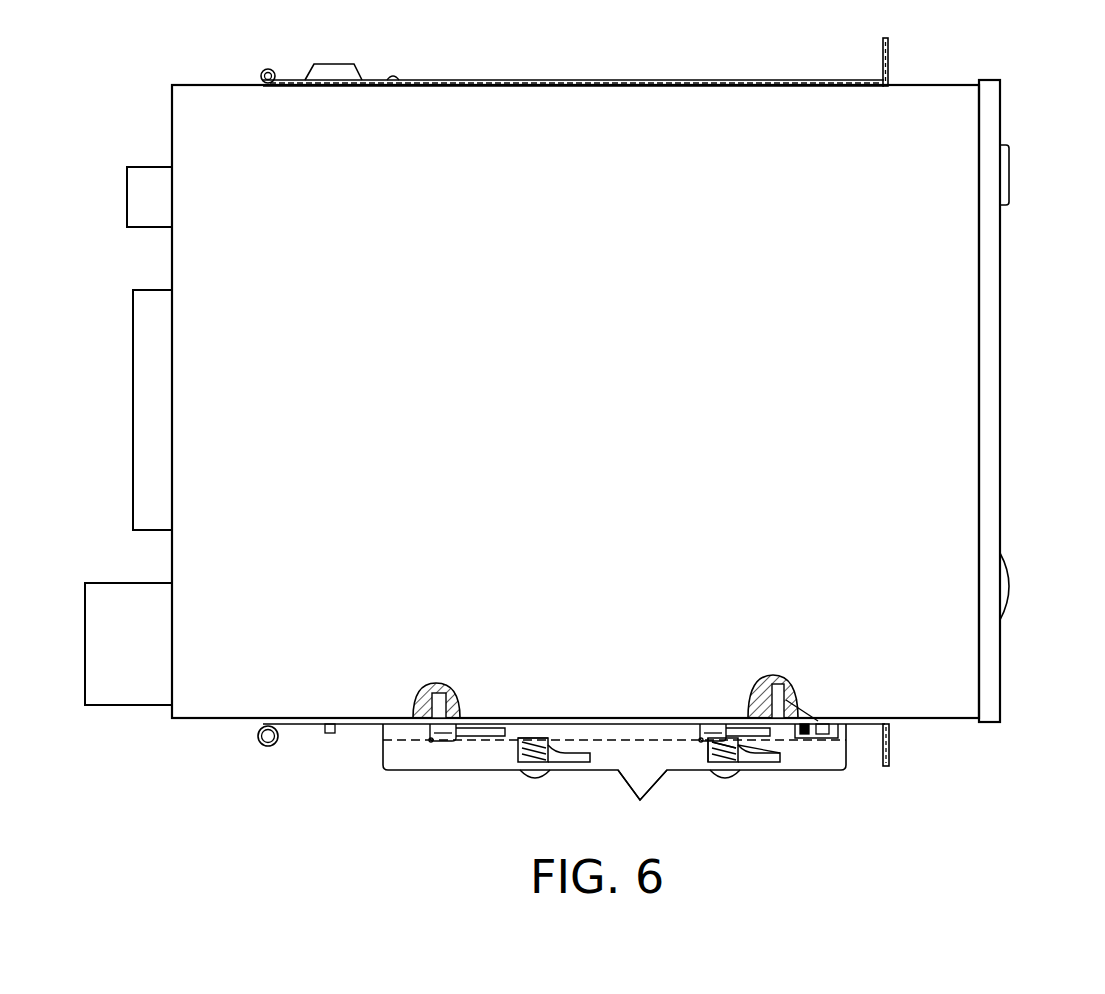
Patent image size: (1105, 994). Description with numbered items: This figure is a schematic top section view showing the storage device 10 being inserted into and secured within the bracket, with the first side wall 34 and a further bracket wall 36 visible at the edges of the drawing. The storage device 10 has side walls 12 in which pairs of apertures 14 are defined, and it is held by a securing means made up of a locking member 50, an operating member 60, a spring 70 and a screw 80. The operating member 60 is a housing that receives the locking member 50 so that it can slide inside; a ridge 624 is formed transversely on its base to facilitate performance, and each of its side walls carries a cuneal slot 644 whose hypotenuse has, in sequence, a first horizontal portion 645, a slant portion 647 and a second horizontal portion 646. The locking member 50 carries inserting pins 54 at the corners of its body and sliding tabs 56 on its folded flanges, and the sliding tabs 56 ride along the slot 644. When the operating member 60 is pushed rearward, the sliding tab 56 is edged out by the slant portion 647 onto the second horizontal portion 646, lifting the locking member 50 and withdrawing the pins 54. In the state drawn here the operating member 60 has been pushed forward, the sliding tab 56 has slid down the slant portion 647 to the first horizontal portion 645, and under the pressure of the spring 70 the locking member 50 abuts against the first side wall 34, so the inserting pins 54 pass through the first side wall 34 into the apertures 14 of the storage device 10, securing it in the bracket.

The storage device 10 is at (948, 385).
The side wall 12 is at (952, 720).
The aperture 14 is at (856, 720).
The first side wall 34 is at (900, 727).
The top plate 36 is at (818, 82).
The locking member 50 is at (470, 740).
The inserting pin 54 is at (405, 733).
The sliding tab 56 is at (500, 745).
The operating member 60 is at (388, 735).
The spring 70 is at (530, 748).
The screw 80 is at (540, 776).
The ridge 624 is at (632, 790).
The cuneal slot 644 is at (518, 745).
The first horizontal portion 645 is at (712, 740).
The second horizontal portion 646 is at (768, 738).
The slant portion 647 is at (745, 738).